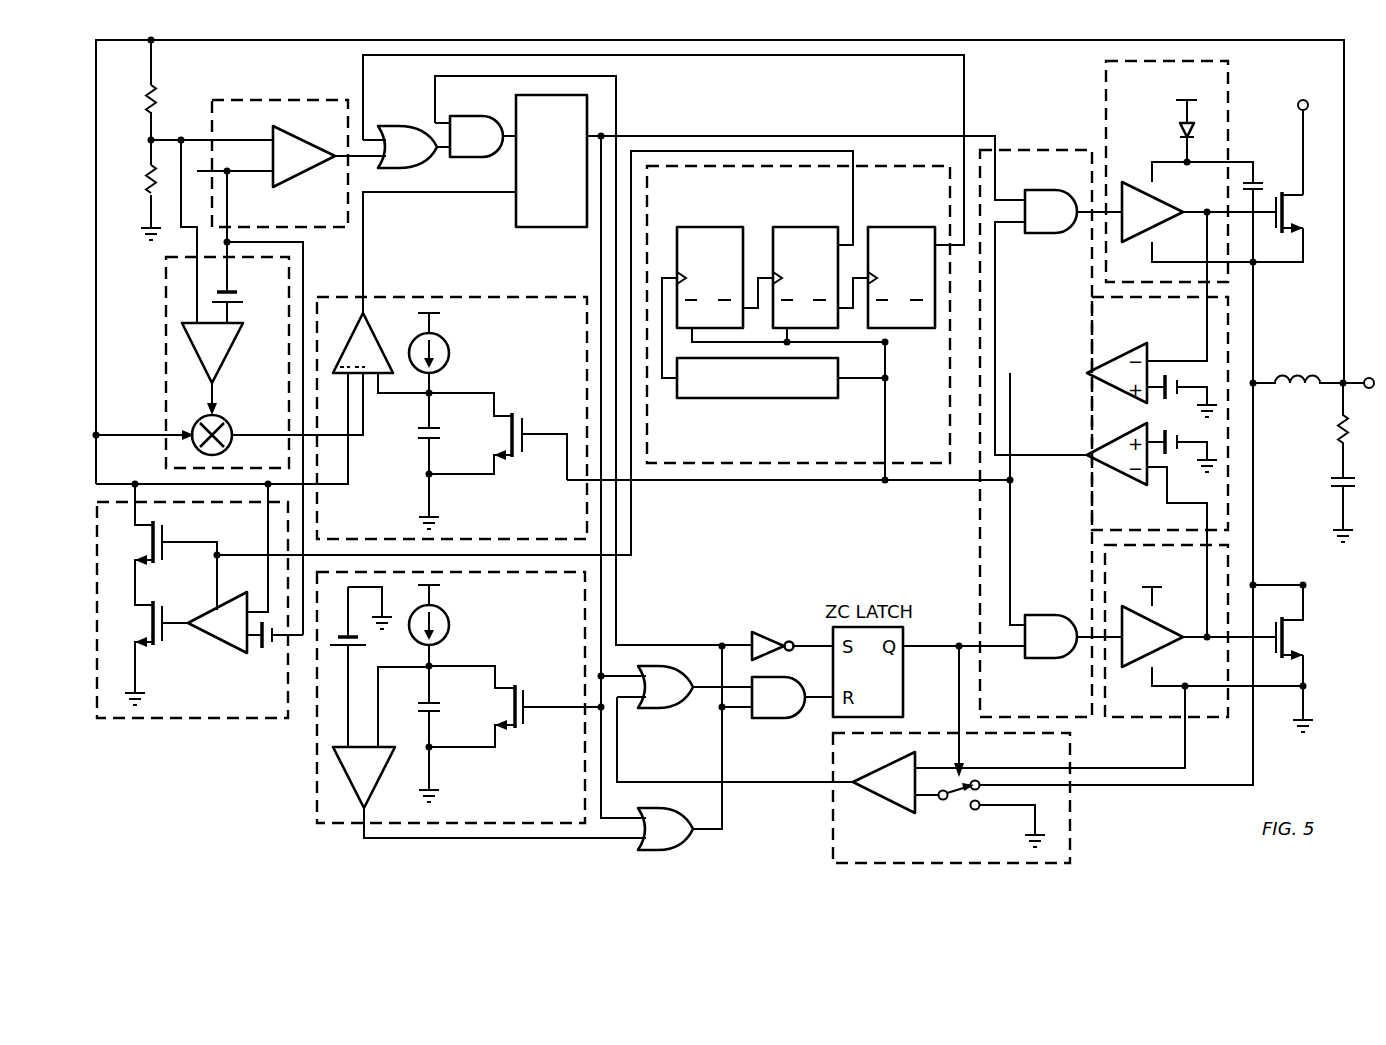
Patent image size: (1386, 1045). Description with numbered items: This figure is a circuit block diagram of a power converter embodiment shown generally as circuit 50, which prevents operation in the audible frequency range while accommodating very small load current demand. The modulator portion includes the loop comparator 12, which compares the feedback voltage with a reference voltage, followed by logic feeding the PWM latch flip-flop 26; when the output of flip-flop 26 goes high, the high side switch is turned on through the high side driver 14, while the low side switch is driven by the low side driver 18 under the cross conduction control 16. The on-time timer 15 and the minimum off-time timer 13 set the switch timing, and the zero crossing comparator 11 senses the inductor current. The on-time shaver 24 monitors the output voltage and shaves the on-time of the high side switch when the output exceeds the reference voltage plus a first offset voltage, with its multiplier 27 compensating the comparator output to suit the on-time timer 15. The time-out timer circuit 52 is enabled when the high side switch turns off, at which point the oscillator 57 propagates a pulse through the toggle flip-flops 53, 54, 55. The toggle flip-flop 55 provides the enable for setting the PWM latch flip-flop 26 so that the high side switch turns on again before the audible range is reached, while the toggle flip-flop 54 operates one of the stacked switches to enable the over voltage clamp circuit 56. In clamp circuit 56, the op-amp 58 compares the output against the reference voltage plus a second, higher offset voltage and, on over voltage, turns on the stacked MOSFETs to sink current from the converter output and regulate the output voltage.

The circuit 50 is at (1171, 805).
The loop comparator 12 is at (272, 101).
The PWM latch flip-flop 26 is at (516, 218).
The on-time shaver 24 is at (195, 362).
The multiplier 27 is at (228, 422).
The on-time timer 15 is at (510, 519).
The minimum off-time timer 13 is at (318, 745).
The over voltage clamp circuit 56 is at (200, 633).
The op-amp 58 is at (222, 645).
The time-out timer circuit 52 is at (798, 323).
The toggle flip-flop 53 is at (703, 226).
The toggle flip-flop 54 is at (798, 226).
The toggle flip-flop 55 is at (918, 226).
The oscillator 57 is at (752, 400).
The zero crossing comparator 11 is at (1072, 818).
The cross conduction control 16 is at (1026, 150).
The high side driver 14 is at (1106, 122).
The low side driver 18 is at (1203, 718).